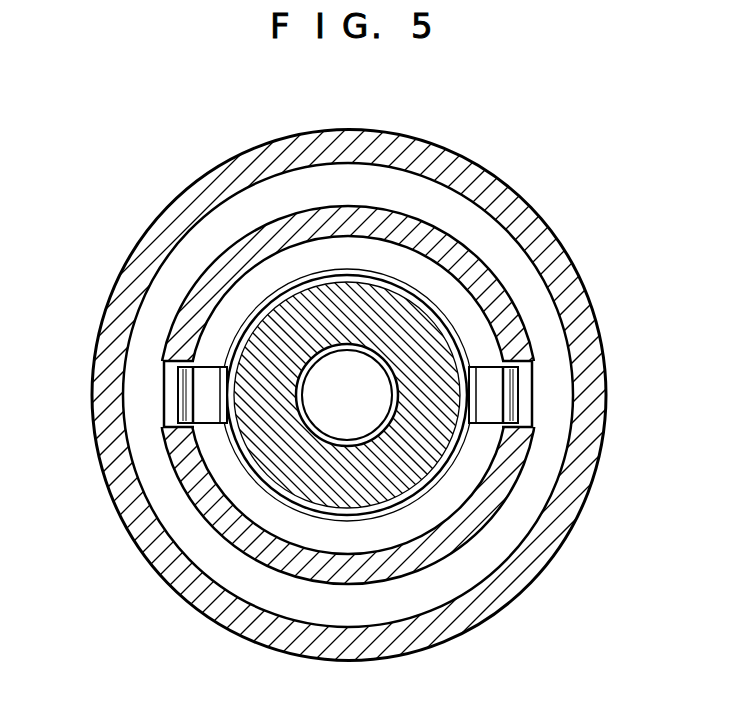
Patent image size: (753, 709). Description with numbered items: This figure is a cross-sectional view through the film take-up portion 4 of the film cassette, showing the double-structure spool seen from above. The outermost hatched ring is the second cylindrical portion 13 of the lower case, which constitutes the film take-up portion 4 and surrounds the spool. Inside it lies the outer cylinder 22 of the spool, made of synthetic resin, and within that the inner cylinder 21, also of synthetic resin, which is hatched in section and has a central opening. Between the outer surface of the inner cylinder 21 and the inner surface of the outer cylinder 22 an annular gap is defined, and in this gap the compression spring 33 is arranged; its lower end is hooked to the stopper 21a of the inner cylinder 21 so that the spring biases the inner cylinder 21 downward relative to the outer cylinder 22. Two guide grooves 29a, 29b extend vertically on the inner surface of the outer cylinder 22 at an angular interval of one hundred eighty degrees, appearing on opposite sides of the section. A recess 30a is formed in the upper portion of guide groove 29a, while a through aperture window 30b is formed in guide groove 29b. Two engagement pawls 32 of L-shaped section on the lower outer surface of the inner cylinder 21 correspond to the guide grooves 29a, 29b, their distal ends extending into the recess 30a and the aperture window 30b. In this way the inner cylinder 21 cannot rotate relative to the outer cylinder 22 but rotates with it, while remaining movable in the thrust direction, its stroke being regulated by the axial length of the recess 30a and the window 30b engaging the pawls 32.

The film take-up portion 4 is at (587, 513).
The second cylindrical portion 13 is at (427, 637).
The outer cylinder 22 is at (508, 298).
The compression spring 33 is at (393, 270).
The inner cylinder 21 is at (430, 316).
The stopper 21a is at (222, 362).
The guide groove 29a is at (525, 428).
The guide groove 29b is at (173, 426).
The recess 30a is at (524, 390).
The through aperture window 30b is at (165, 390).
The engagement pawl 32 is at (215, 423).